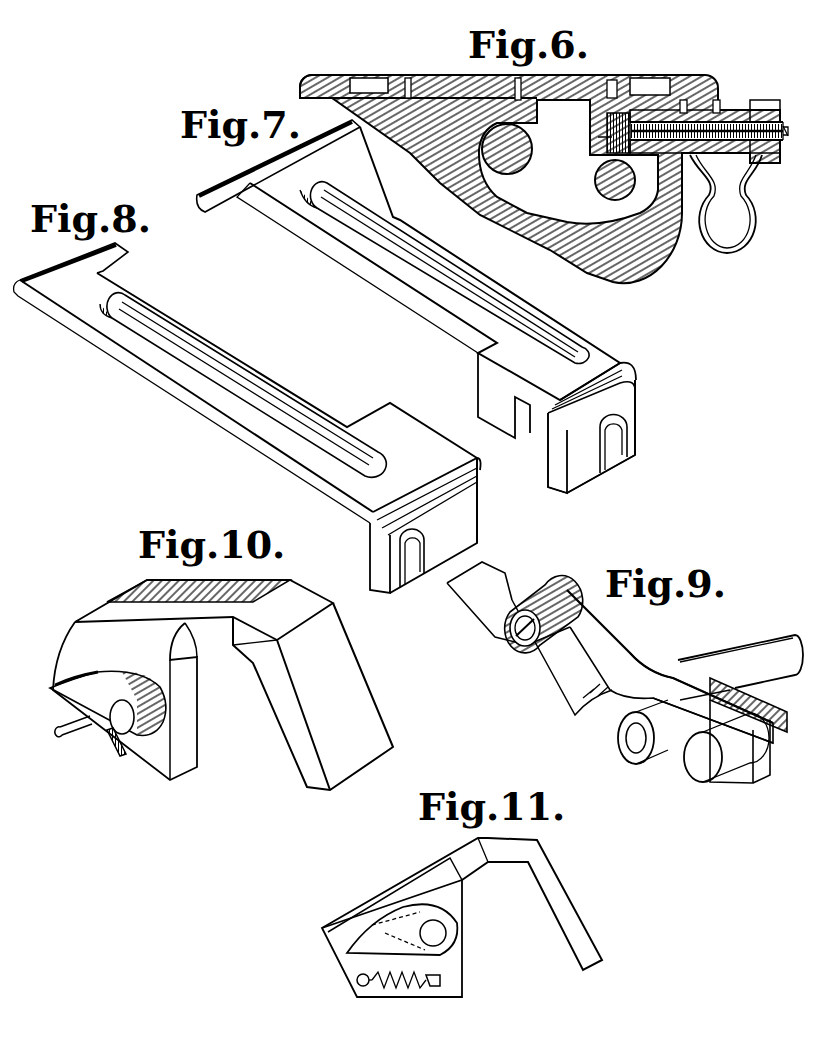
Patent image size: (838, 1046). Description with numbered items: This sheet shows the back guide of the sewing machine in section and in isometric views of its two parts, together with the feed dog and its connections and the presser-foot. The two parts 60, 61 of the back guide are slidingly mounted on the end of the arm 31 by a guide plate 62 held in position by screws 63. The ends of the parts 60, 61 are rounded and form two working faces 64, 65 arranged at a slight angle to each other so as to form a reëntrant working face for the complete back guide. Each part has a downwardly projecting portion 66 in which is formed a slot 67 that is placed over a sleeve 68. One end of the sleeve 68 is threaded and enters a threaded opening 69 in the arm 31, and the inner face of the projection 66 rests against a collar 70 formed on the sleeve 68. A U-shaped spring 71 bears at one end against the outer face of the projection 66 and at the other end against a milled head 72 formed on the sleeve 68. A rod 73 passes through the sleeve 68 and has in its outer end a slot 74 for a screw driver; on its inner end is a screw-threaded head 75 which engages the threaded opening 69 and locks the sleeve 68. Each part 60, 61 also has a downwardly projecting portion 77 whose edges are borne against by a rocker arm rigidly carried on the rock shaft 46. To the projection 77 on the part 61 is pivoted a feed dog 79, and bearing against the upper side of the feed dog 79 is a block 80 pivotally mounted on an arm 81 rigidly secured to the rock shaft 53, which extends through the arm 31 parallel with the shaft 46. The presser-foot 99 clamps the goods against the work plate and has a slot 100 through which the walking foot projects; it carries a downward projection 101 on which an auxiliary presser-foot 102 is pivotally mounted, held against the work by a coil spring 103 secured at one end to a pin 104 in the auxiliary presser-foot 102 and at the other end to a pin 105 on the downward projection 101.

In FIG. 6, the arm 31 is at (620, 268).
In FIG. 6, the rock shaft 46 is at (622, 198).
In FIG. 6, the rock shaft 53 is at (500, 170).
In FIG. 9, the rock shaft 53 is at (752, 656).
In FIG. 6, the back guide part 60 is at (383, 77).
In FIG. 7, the back guide part 60 is at (340, 252).
In FIG. 8, the back guide part 61 is at (216, 410).
In FIG. 6, the guide plate 62 is at (452, 74).
In FIG. 6, the screws 63 is at (409, 78).
In FIG. 6, the working face 64 is at (310, 77).
In FIG. 7, the working face 64 is at (253, 170).
In FIG. 8, the working face 65 is at (74, 260).
In FIG. 6, the downwardly projecting portion 66 is at (716, 100).
In FIG. 7, the downwardly projecting portion 66 is at (578, 475).
In FIG. 8, the downwardly projecting portion 66 is at (425, 525).
In FIG. 7, the slot 67 is at (606, 452).
In FIG. 8, the slot 67 is at (404, 560).
In FIG. 6, the sleeve 68 is at (733, 110).
In FIG. 6, the threaded opening 69 is at (608, 125).
In FIG. 6, the collar 70 is at (694, 163).
In FIG. 6, the U-shaped spring 71 is at (733, 243).
In FIG. 6, the milled head 72 is at (766, 163).
In FIG. 6, the rod 73 is at (652, 125).
In FIG. 6, the slot 74 is at (786, 133).
In FIG. 6, the screw-threaded head 75 is at (606, 134).
In FIG. 7, the downwardly projecting portion 77 is at (485, 392).
In FIG. 9, the downwardly projecting portion 77 is at (757, 770).
In FIG. 9, the feed dog 79 is at (660, 688).
In FIG. 9, the block 80 is at (545, 600).
In FIG. 9, the arm 81 is at (618, 652).
In FIG. 10, the presser-foot 99 is at (234, 685).
In FIG. 11, the presser-foot 99 is at (398, 888).
In FIG. 10, the slot 100 is at (137, 617).
In FIG. 10, the downward projection 101 is at (183, 747).
In FIG. 11, the downward projection 101 is at (455, 970).
In FIG. 10, the auxiliary presser-foot 102 is at (97, 680).
In FIG. 11, the auxiliary presser-foot 102 is at (380, 915).
In FIG. 11, the coil spring 103 is at (400, 988).
In FIG. 10, the pin 104 is at (116, 757).
In FIG. 11, the pin 104 is at (436, 987).
In FIG. 10, the pin 105 is at (72, 733).
In FIG. 11, the pin 105 is at (357, 985).